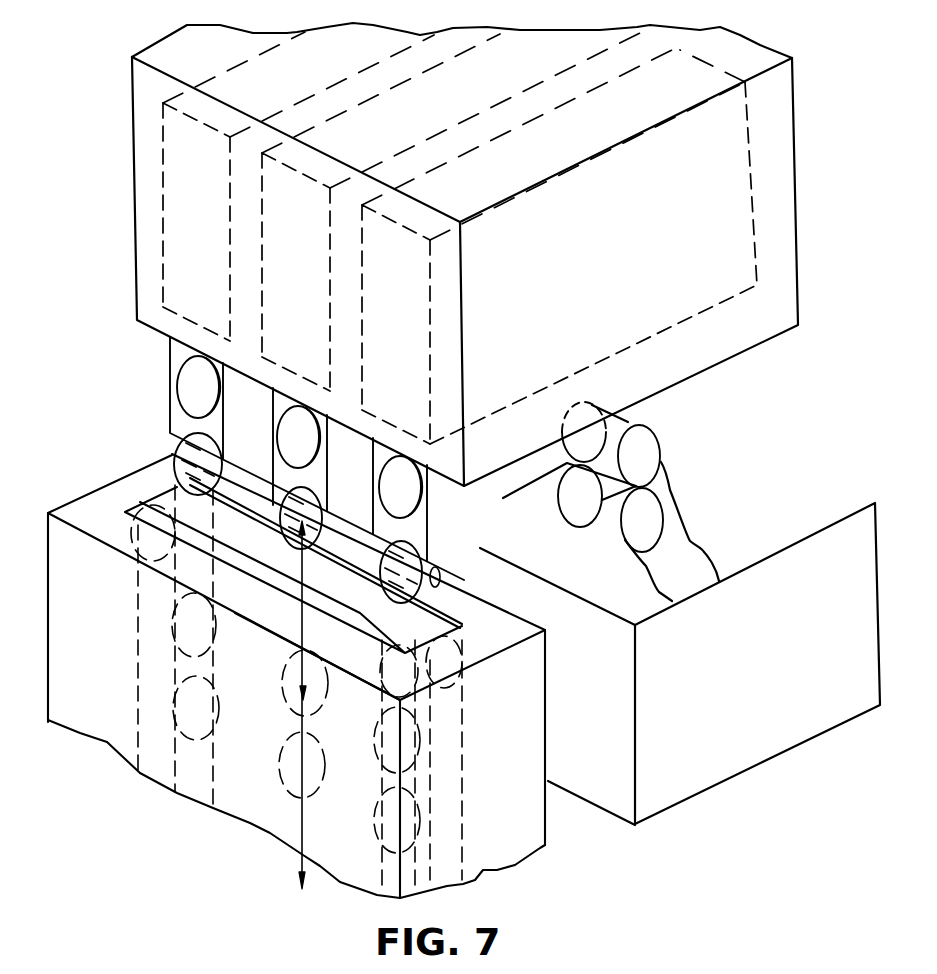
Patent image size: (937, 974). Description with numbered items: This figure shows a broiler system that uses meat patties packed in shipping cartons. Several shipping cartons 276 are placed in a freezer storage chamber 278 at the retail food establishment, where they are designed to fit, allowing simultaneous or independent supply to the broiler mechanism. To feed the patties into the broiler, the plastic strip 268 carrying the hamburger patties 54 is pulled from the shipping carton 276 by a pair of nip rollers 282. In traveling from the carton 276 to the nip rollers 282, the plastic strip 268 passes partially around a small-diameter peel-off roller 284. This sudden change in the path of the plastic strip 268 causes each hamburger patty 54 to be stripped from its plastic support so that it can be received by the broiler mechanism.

The freezer storage chamber 278 is at (797, 80).
The shipping carton 276 is at (330, 186).
The hamburger patty 54 is at (277, 432).
The peel-off roller 284 is at (437, 570).
The plastic strip 268 is at (556, 528).
The nip rollers 282 is at (662, 458).